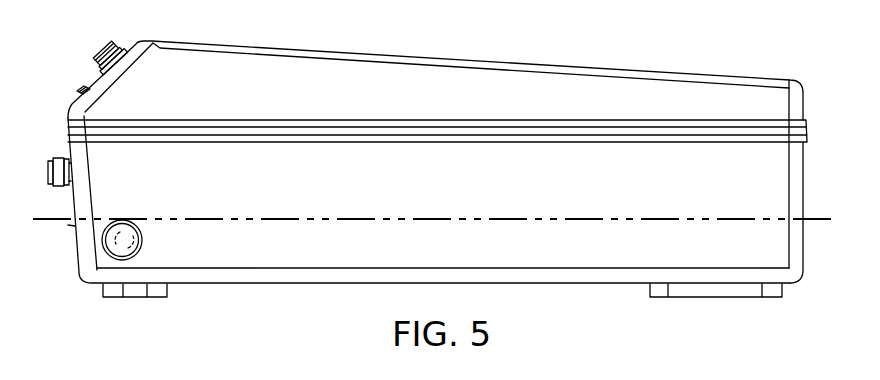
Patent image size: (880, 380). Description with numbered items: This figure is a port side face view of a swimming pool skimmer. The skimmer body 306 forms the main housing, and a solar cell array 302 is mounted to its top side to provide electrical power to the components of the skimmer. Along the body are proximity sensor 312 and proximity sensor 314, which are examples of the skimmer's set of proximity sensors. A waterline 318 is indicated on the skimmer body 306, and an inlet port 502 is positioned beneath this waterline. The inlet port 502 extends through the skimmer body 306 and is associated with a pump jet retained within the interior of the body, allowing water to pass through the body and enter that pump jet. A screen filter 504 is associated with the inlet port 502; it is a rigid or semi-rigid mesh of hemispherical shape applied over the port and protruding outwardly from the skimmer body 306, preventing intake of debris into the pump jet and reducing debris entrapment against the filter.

The solar cell array 302 is at (470, 58).
The skimmer body 306 is at (805, 102).
The proximity sensor 312 is at (103, 47).
The proximity sensor 314 is at (48, 168).
The waterline 318 is at (362, 217).
The inlet port 502 is at (138, 253).
The screen filter 504 is at (138, 227).